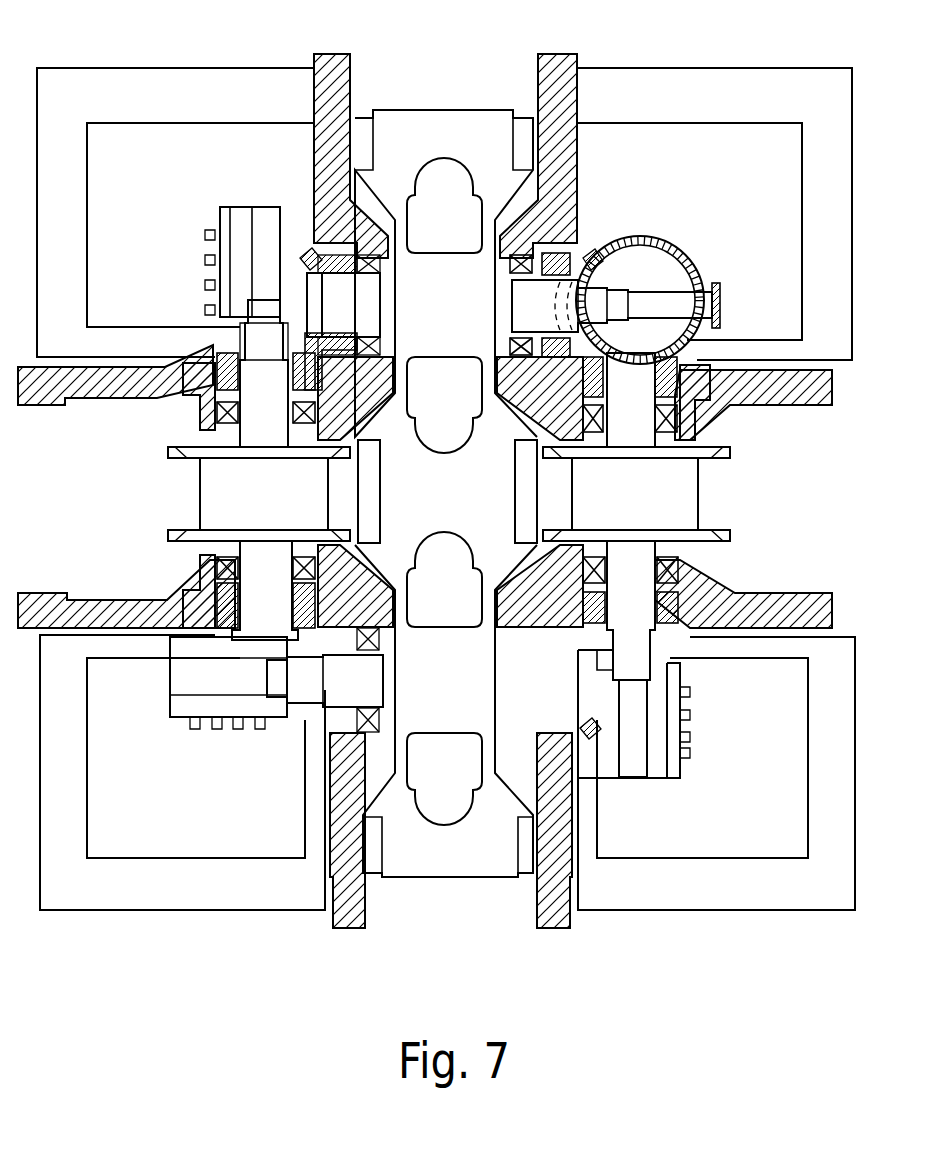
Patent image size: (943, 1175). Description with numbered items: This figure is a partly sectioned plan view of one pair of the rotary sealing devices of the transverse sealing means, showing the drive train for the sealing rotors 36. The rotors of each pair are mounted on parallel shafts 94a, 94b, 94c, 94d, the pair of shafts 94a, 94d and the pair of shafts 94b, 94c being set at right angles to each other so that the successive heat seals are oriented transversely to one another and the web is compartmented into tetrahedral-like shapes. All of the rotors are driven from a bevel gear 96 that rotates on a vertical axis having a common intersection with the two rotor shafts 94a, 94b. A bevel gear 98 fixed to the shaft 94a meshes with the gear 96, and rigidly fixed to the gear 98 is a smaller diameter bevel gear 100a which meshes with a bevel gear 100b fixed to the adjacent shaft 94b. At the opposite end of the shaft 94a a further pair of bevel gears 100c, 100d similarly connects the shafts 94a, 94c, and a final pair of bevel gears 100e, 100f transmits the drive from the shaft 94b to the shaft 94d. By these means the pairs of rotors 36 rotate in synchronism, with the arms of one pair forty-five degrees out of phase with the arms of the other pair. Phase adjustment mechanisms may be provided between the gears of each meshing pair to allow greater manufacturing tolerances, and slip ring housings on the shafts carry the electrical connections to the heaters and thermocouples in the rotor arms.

The rotors 36 is at (483, 130).
The shaft 94a is at (638, 552).
The shaft 94b is at (338, 290).
The shaft 94c is at (347, 690).
The shaft 94d is at (262, 560).
The bevel gear 96 is at (660, 240).
The bevel gear 98 is at (713, 413).
The bevel gear 100a is at (715, 313).
The bevel gear 100b is at (590, 260).
The bevel gear 100c is at (638, 648).
The bevel gear 100d is at (587, 730).
The bevel gear 100e is at (320, 260).
The bevel gear 100f is at (210, 345).